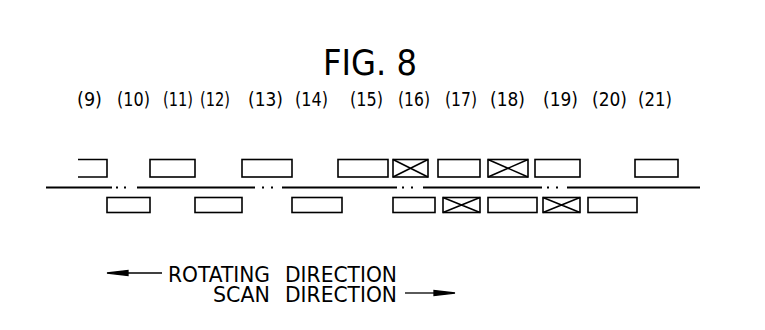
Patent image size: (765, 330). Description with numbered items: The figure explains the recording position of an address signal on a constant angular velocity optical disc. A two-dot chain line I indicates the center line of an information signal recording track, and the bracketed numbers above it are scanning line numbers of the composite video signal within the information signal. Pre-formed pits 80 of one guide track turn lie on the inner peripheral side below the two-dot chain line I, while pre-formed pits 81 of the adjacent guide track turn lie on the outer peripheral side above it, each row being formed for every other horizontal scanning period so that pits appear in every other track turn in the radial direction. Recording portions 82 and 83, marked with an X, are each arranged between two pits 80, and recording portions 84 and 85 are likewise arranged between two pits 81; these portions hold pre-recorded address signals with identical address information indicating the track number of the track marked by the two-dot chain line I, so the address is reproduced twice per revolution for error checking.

The pre-formed pits 80 is at (375, 226).
The pre-formed pits 81 is at (378, 149).
The recording portion 82 is at (467, 213).
The recording portion 83 is at (563, 213).
The recording portion 84 is at (412, 159).
The recording portion 85 is at (510, 159).
The two-dot chain line I is at (63, 187).